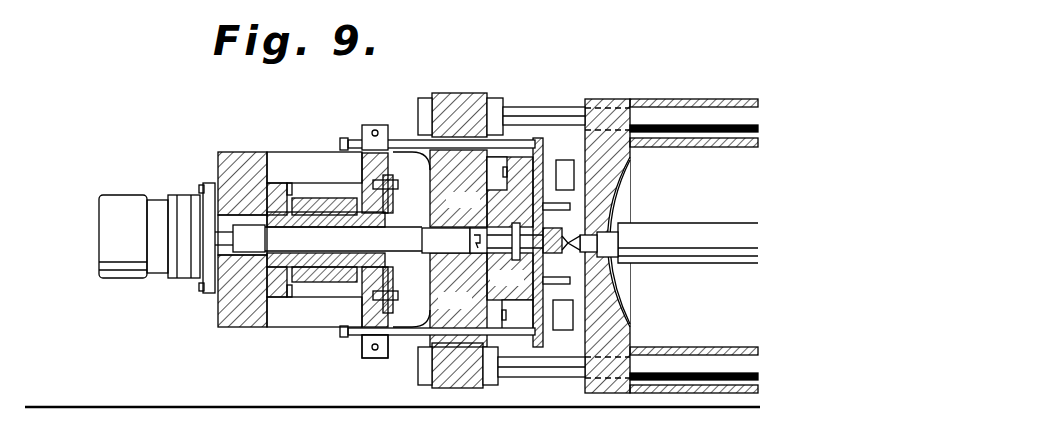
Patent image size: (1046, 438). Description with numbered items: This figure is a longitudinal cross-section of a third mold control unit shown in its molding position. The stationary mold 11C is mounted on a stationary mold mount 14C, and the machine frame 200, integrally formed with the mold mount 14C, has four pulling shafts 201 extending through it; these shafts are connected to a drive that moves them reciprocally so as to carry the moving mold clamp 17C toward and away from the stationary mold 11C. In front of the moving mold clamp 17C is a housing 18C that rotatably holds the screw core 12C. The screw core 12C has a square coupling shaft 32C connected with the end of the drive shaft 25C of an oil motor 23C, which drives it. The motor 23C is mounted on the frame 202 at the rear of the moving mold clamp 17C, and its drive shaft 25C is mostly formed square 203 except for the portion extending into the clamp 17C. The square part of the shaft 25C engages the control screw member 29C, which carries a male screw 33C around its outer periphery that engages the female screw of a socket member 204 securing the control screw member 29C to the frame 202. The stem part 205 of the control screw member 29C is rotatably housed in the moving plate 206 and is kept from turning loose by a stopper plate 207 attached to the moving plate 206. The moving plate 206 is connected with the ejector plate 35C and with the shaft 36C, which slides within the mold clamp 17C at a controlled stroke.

The machine frame 200 is at (687, 99).
The pulling shafts 201 is at (572, 107).
The frame 202 is at (240, 154).
The square portion of drive shaft 203 is at (303, 242).
The socket member 204 is at (270, 288).
The stem part 205 is at (398, 290).
The moving plate 206 is at (410, 345).
The stopper plate 207 is at (398, 195).
The stationary mold 11C is at (567, 290).
The screw core 12C is at (540, 238).
The stationary mold mount 14C is at (609, 327).
The moving mold clamp 17C is at (470, 310).
The housing 18C is at (510, 243).
The oil motor 23C is at (131, 200).
The drive shaft 25C is at (454, 240).
The control screw member 29C is at (307, 196).
The square coupling shaft 32C is at (470, 222).
The male screw 33C is at (330, 266).
The ejector plate 35C is at (535, 328).
The shaft 36C is at (403, 145).